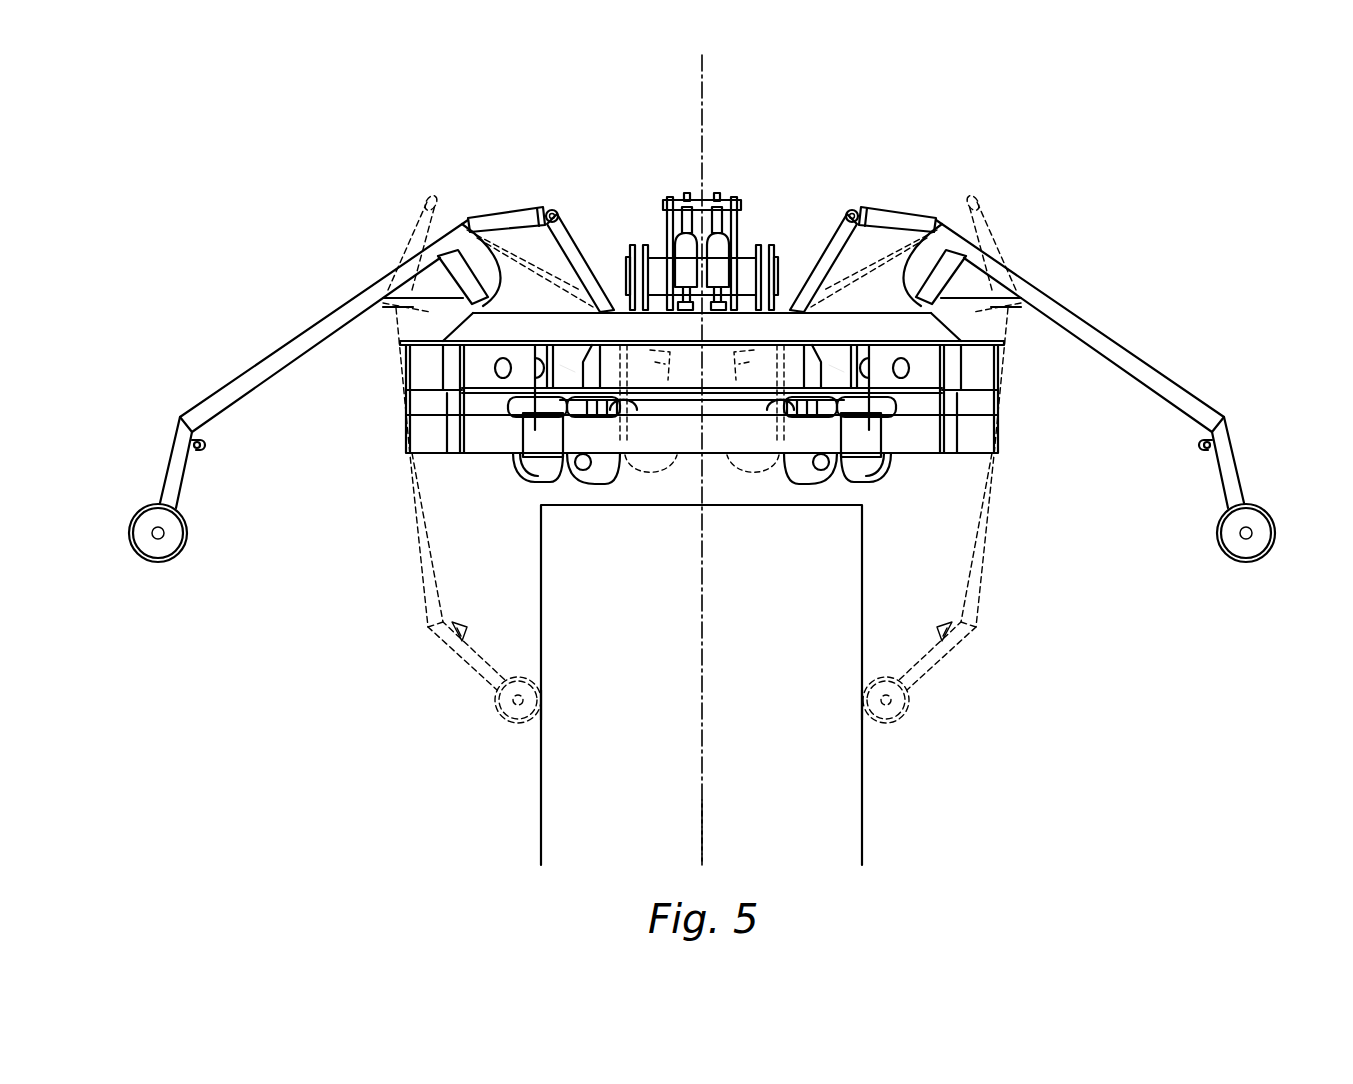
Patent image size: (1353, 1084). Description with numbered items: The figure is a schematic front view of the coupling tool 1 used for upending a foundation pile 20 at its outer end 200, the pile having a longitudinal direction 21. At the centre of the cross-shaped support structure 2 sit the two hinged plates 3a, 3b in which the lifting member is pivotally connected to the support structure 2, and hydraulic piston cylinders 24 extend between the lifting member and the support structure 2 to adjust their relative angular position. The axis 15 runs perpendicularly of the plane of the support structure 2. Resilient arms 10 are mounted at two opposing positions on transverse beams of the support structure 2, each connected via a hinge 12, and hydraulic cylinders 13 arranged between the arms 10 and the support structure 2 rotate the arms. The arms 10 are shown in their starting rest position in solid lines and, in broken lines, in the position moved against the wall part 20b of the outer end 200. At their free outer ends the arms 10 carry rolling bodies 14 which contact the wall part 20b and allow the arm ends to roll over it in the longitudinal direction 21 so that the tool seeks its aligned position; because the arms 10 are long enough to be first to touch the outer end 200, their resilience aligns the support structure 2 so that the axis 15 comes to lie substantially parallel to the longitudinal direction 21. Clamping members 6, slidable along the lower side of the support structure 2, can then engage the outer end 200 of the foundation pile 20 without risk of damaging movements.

The coupling tool 1 is at (316, 225).
The support structure 2 is at (547, 332).
The hinged plate 3a is at (626, 265).
The hinged plate 3b is at (778, 265).
The clamping member 6 is at (567, 368).
The resilient arm 10 is at (306, 337).
The hinge 12 is at (490, 298).
The hydraulic cylinder 13 is at (578, 250).
The rolling body 14 is at (159, 547).
The axis 15 is at (703, 86).
The hydraulic piston cylinder 24 is at (711, 215).
The outer end 200 is at (563, 805).
The foundation pile 20 is at (701, 685).
The wall part 20b is at (540, 699).
The longitudinal direction 21 is at (703, 837).